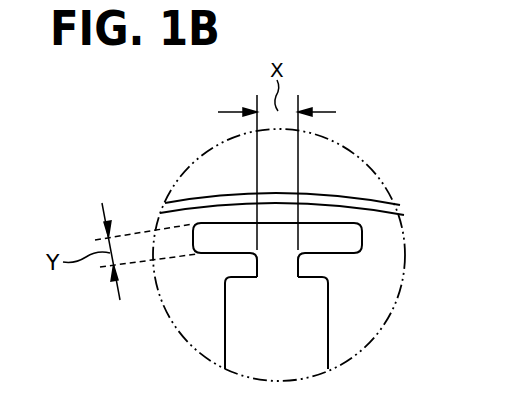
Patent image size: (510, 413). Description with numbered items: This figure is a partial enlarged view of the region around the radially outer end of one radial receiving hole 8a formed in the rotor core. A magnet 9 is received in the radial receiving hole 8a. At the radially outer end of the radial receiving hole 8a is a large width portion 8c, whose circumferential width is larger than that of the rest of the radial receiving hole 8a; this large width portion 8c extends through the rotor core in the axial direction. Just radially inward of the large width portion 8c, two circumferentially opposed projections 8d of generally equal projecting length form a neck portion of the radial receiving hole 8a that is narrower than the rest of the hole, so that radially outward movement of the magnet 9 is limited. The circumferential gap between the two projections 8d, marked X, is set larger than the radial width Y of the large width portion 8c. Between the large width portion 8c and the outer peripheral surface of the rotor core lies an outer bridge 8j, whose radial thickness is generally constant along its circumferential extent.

The outer bridge 8j is at (278, 212).
The large width portion 8c is at (358, 242).
The circumferentially opposed projections 8d is at (313, 276).
The radial receiving hole 8a is at (320, 313).
The magnet 9 is at (238, 318).